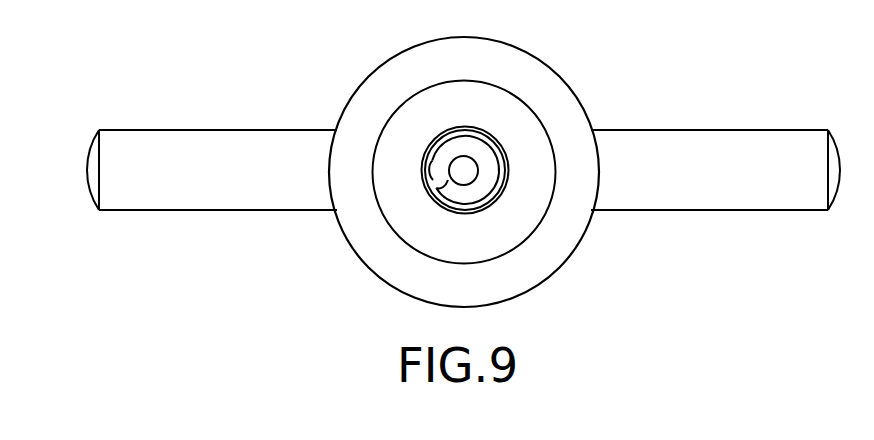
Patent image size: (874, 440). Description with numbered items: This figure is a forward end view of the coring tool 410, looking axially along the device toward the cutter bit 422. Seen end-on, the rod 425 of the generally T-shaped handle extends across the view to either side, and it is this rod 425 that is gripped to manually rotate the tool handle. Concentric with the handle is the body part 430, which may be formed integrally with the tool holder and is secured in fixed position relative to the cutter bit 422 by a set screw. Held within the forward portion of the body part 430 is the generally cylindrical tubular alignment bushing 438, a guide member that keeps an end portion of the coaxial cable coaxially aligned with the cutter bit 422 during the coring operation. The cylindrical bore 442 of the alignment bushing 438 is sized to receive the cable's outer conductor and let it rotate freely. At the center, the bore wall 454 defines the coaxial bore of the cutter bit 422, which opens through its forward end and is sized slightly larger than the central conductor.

The coring tool 410 is at (463, 175).
The cutter bit 422 is at (443, 118).
The rod 425 is at (763, 148).
The body part 430 is at (537, 282).
The alignment bushing 438 is at (552, 115).
The cylindrical bore 442 is at (503, 196).
The bore wall 454 is at (463, 174).